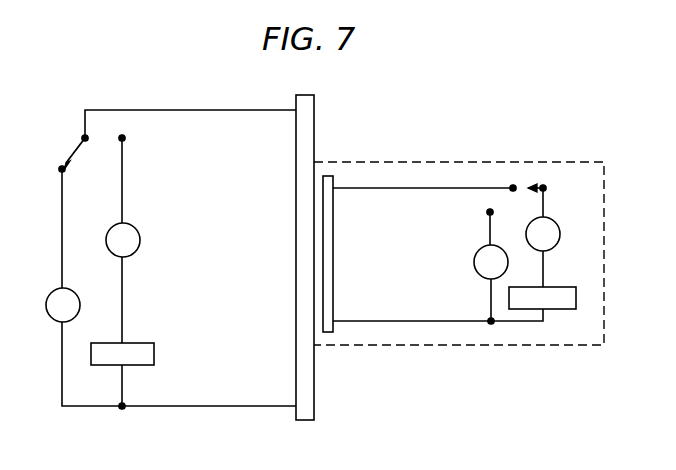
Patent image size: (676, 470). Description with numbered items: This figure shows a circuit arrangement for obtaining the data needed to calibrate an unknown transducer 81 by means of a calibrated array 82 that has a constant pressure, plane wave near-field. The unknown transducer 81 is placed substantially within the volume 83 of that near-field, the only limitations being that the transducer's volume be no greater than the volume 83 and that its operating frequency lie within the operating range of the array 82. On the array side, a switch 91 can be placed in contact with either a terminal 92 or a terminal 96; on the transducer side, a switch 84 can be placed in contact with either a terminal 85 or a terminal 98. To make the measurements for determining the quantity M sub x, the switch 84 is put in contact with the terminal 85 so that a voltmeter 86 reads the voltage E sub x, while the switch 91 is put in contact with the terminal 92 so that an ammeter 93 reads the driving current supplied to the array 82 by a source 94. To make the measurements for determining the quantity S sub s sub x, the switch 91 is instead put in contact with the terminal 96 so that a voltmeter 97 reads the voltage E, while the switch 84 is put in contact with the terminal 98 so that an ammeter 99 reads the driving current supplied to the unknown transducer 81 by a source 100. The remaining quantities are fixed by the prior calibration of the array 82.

The unknown transducer 81 is at (333, 272).
The calibrated array 82 is at (314, 108).
The volume of the constant pressure, plane wave near-field 83 is at (472, 162).
The switch 84 is at (523, 186).
The terminal 85 is at (489, 211).
The voltmeter 86 is at (474, 263).
The switch 91 is at (79, 146).
The terminal 92 is at (124, 136).
The ammeter 93 is at (139, 230).
The source 94 is at (157, 343).
The terminal 96 is at (60, 167).
The voltmeter 97 is at (79, 297).
The terminal 98 is at (545, 186).
The ammeter 99 is at (574, 227).
The source 100 is at (578, 290).